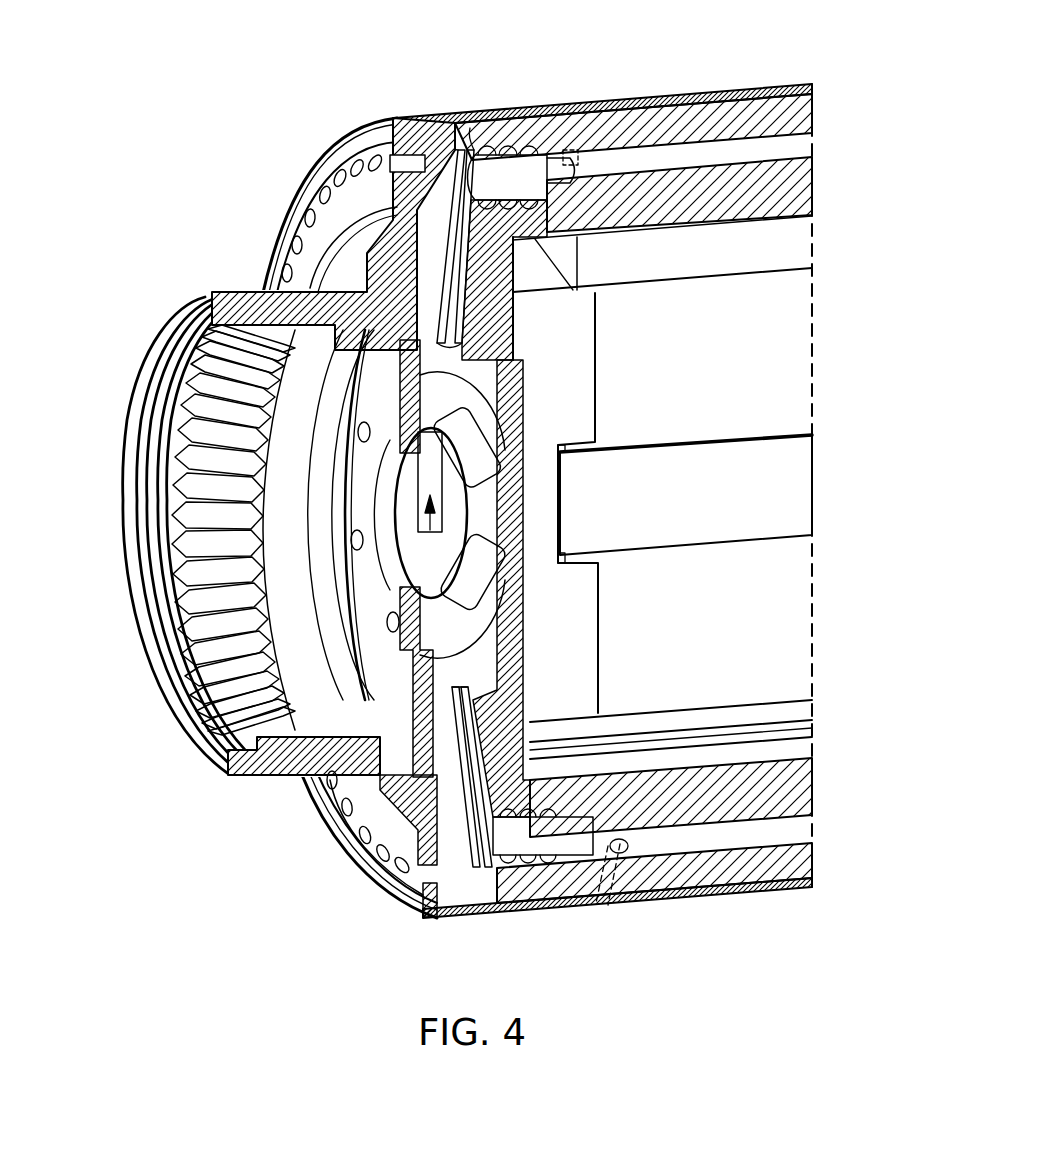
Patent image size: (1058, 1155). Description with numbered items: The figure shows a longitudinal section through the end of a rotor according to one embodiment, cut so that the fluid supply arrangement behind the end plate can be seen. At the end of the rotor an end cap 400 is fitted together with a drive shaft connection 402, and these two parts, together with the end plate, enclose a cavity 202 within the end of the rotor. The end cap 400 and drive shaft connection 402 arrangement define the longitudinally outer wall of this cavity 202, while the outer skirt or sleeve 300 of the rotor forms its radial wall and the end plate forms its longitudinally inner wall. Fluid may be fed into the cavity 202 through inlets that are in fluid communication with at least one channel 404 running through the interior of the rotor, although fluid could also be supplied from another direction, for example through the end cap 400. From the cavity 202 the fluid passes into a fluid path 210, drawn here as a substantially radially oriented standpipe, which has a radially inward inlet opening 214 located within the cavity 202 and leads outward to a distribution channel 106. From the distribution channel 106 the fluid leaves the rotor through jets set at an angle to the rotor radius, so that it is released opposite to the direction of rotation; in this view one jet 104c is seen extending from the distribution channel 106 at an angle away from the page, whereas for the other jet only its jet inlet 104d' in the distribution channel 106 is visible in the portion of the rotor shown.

The jet 104c is at (600, 905).
The jet inlet 104d' is at (603, 91).
The distribution channel 106 is at (785, 147).
The cavity 202 is at (435, 512).
The fluid path 210 is at (465, 240).
The inlet opening 214 is at (500, 362).
The outer skirt or sleeve 300 is at (340, 135).
The end cap 400 is at (300, 215).
The drive shaft connection 402 is at (145, 370).
The channel 404 is at (788, 470).